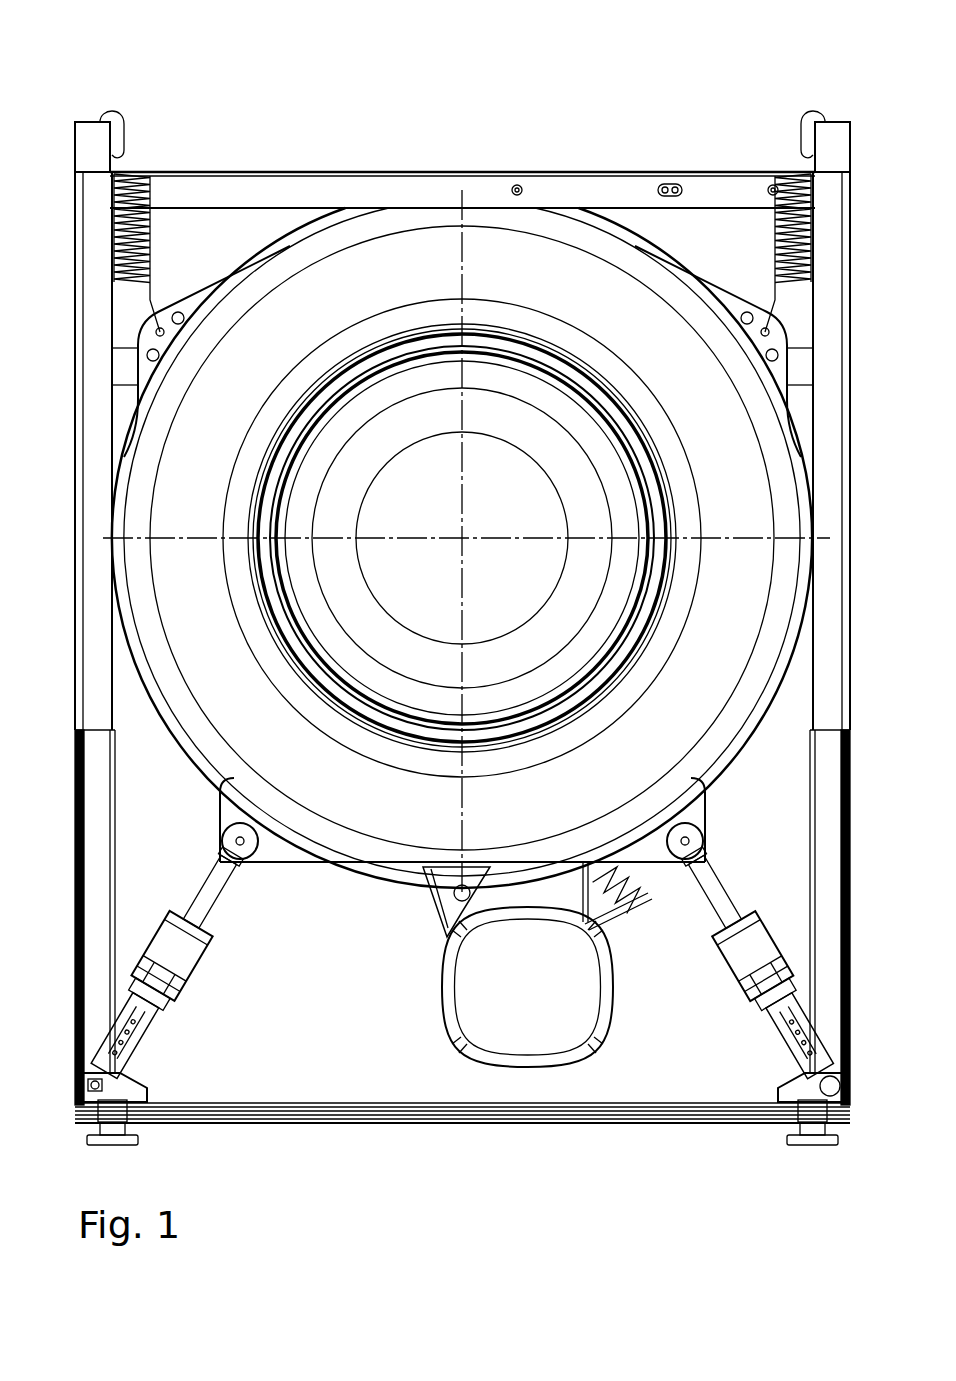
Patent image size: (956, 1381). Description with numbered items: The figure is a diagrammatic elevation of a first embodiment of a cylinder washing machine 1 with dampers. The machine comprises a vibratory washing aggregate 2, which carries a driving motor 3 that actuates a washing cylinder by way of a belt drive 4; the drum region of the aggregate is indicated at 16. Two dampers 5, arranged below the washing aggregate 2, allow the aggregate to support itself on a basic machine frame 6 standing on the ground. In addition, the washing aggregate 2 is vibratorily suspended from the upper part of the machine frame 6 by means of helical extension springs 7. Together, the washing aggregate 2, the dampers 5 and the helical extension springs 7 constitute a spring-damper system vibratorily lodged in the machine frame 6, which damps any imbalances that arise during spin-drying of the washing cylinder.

The washing machine 1 is at (276, 132).
The vibratory washing aggregate 2 is at (553, 283).
The driving motor 3 is at (522, 1032).
The belt drive 4 is at (433, 888).
The dampers 5 is at (193, 960).
The basic machine frame 6 is at (640, 1120).
The helical extension springs 7 is at (165, 188).
The drum 16 is at (462, 537).